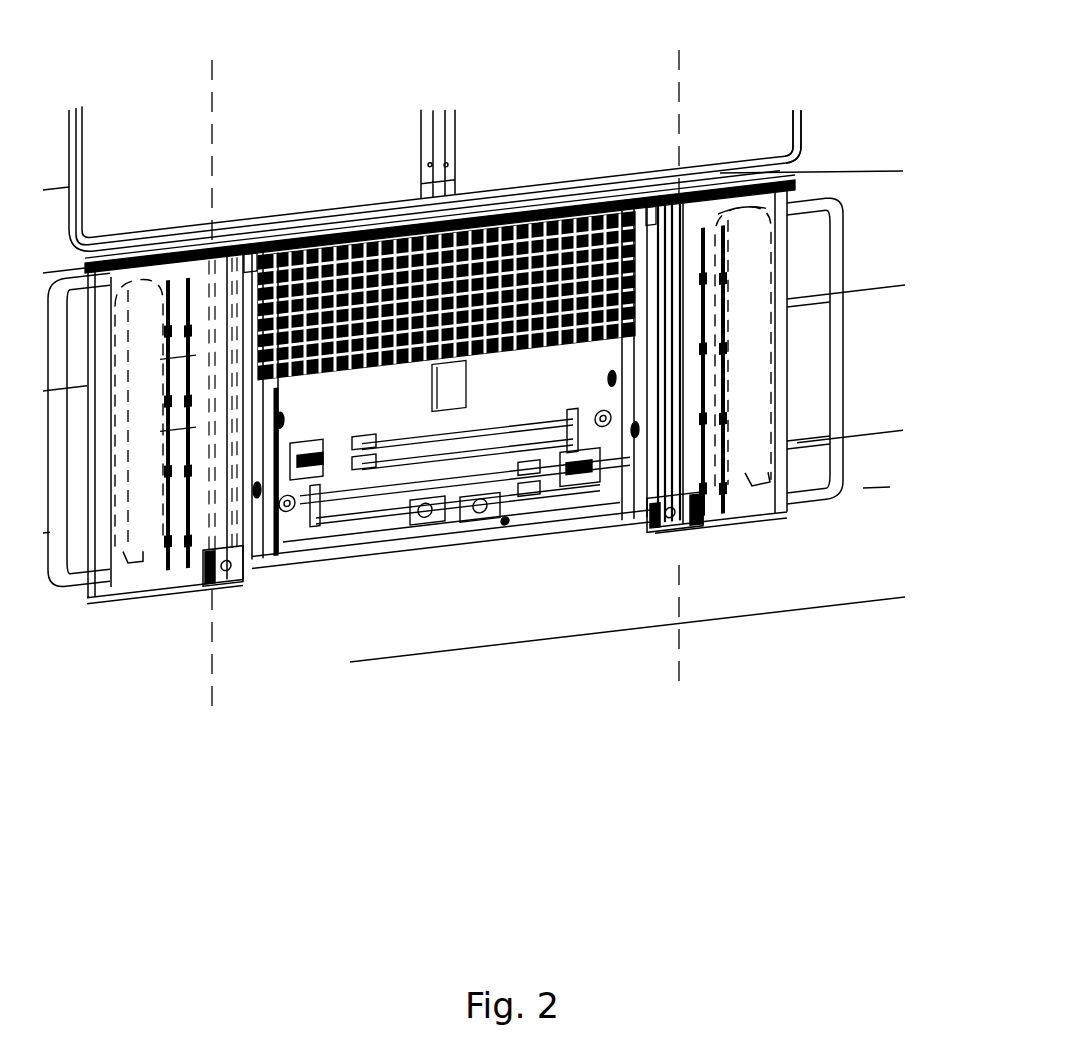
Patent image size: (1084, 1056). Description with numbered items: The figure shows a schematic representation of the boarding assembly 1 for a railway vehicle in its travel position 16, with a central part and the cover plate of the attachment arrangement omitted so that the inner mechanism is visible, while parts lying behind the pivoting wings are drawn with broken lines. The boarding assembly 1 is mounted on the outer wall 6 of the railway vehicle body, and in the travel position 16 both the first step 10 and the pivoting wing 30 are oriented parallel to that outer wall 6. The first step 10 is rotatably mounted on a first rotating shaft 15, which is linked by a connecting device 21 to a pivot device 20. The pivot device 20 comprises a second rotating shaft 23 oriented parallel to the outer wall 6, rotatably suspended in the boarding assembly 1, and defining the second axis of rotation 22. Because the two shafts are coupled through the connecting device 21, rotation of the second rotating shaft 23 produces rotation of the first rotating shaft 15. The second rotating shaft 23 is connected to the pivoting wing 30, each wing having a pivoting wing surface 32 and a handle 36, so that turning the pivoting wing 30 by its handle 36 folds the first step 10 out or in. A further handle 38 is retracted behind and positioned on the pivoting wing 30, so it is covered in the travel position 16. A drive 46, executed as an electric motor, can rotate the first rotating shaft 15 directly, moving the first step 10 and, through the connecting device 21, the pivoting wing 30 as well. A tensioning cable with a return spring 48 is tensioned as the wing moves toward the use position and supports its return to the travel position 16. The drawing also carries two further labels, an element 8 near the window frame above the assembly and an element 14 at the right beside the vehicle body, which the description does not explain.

The boarding assembly 1 is at (580, 635).
The outer wall of the railway vehicle body 6 is at (863, 410).
The window frame 8 is at (335, 178).
The first step 10 is at (252, 262).
The floor 14 is at (916, 485).
The first rotating shaft 15 is at (400, 543).
The travel position 16 is at (605, 622).
The pivot device 20 is at (232, 525).
The connecting device 21 is at (207, 592).
The second axis of rotation 22 is at (215, 365).
The second rotating shaft 23 is at (213, 478).
The pivoting wing 30 is at (810, 128).
The pivoting wing surface 32 is at (756, 422).
The handle 36 is at (838, 293).
The handle 38 is at (768, 253).
The drive 46 is at (518, 508).
The return spring 48 is at (565, 488).